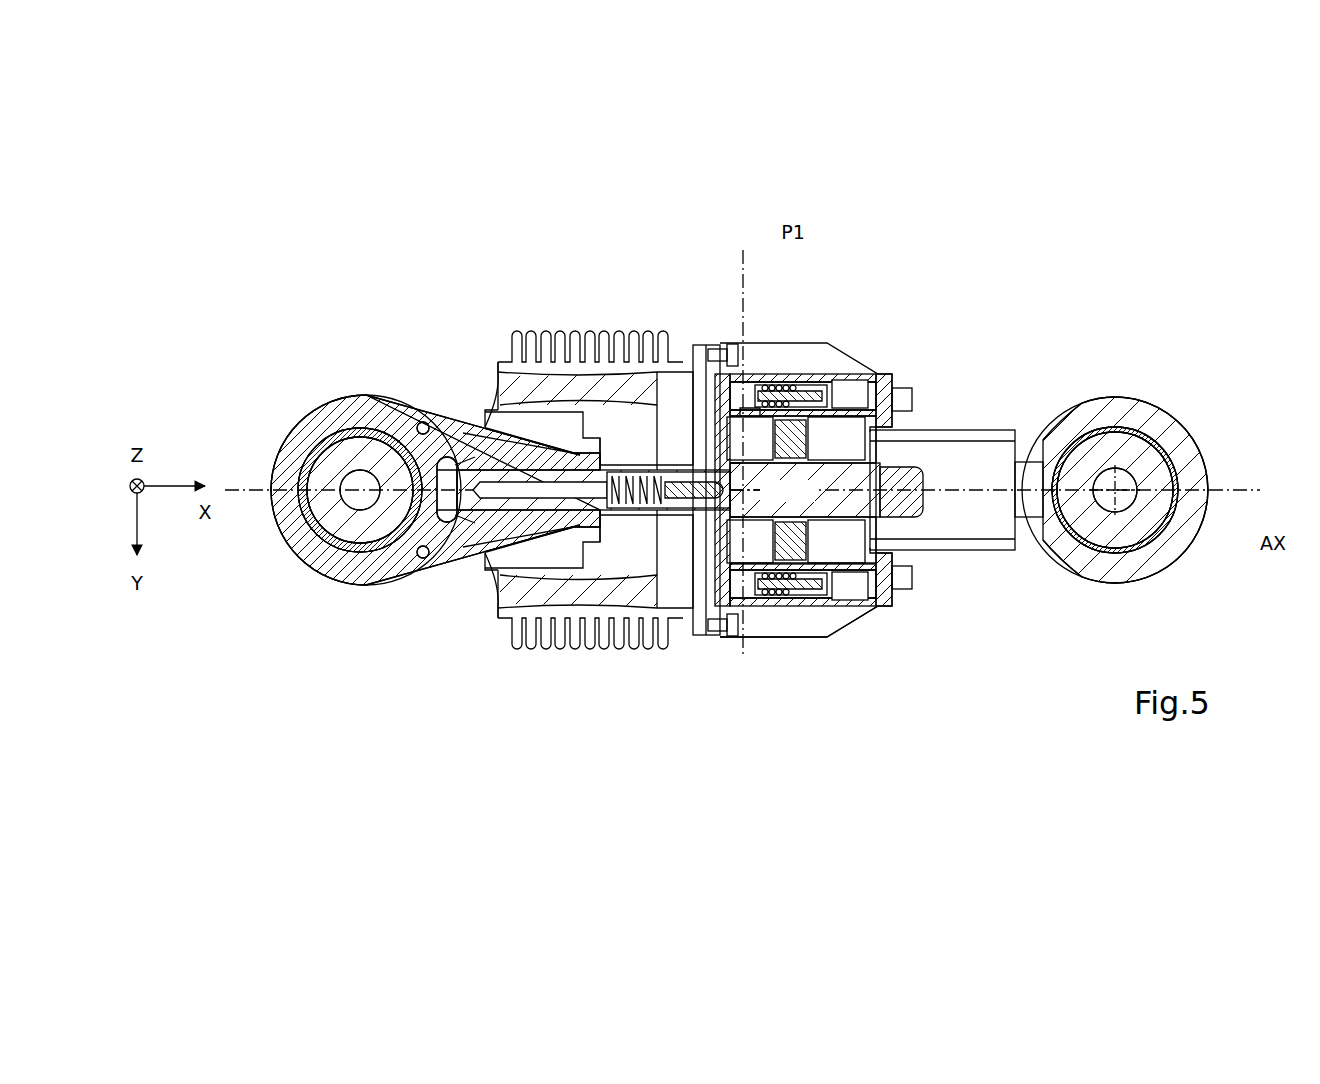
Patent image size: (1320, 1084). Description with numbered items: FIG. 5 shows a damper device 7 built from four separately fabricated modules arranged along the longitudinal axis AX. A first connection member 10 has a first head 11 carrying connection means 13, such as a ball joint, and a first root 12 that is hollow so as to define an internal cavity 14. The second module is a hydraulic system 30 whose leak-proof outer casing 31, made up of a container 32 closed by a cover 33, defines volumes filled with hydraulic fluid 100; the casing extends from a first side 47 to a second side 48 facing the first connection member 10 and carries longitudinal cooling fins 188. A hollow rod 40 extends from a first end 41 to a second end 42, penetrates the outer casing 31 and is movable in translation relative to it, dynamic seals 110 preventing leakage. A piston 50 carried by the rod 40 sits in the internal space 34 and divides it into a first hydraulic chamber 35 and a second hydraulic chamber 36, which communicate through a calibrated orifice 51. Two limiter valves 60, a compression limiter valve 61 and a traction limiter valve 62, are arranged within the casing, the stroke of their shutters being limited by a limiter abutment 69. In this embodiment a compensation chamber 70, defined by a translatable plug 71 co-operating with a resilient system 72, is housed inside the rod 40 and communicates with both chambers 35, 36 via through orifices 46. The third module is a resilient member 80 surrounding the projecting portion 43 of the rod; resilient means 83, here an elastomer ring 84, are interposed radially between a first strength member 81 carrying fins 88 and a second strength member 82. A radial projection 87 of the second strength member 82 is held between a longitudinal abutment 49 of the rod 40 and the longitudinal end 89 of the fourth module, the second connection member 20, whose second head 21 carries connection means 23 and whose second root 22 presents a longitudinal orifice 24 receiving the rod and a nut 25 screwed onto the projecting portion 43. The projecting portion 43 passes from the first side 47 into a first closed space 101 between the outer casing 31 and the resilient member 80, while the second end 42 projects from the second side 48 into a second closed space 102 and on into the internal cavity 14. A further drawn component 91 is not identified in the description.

The damper device 7 is at (1232, 392).
The first connection member 10 is at (1160, 398).
The first head 11 is at (1160, 567).
The first root 12 is at (950, 551).
The connection means 13 is at (1122, 542).
The internal cavity 14 is at (998, 520).
The second connection member 20 is at (262, 548).
The second head 21 is at (333, 410).
The second root 22 is at (500, 566).
The connection means 23 is at (352, 528).
The longitudinal orifice 24 is at (470, 540).
The nut 25 is at (483, 425).
The hydraulic system 30 is at (868, 328).
The outer casing 31 is at (797, 617).
The container 32 is at (870, 372).
The cover 33 is at (886, 374).
The internal space 34 is at (880, 440).
The first hydraulic chamber 35 is at (836, 541).
The second hydraulic chamber 36 is at (801, 540).
The rod 40 is at (631, 550).
The first end 41 is at (445, 445).
The second end 42 is at (936, 505).
The projecting portion 43 is at (604, 512).
The through orifices 46 is at (805, 490).
The first side 47 is at (730, 345).
The second side 48 is at (886, 448).
The longitudinal abutment 49 is at (636, 505).
The piston 50 is at (790, 400).
The calibrated orifice 51 is at (757, 392).
The limiter valve 60 is at (830, 368).
The compression limiter valve 61 is at (835, 640).
The traction limiter valve 62 is at (830, 368).
The limiter abutment 69 is at (751, 639).
The compensation chamber 70 is at (905, 555).
The plug 71 is at (708, 637).
The resilient system 72 is at (603, 468).
The resilient member 80 is at (662, 688).
The first strength member 81 is at (500, 385).
The second strength member 82 is at (480, 435).
The resilient means 83 is at (497, 415).
The ring 84 is at (497, 415).
The radial projection 87 is at (517, 366).
The fins 88 is at (586, 345).
The longitudinal end 89 is at (560, 578).
The rotor 91 is at (500, 470).
The hydraulic fluid 100 is at (801, 435).
The first closed space 101 is at (646, 490).
The second closed space 102 is at (956, 490).
The dynamic seals 110 is at (700, 378).
The longitudinal fins 188 is at (778, 639).